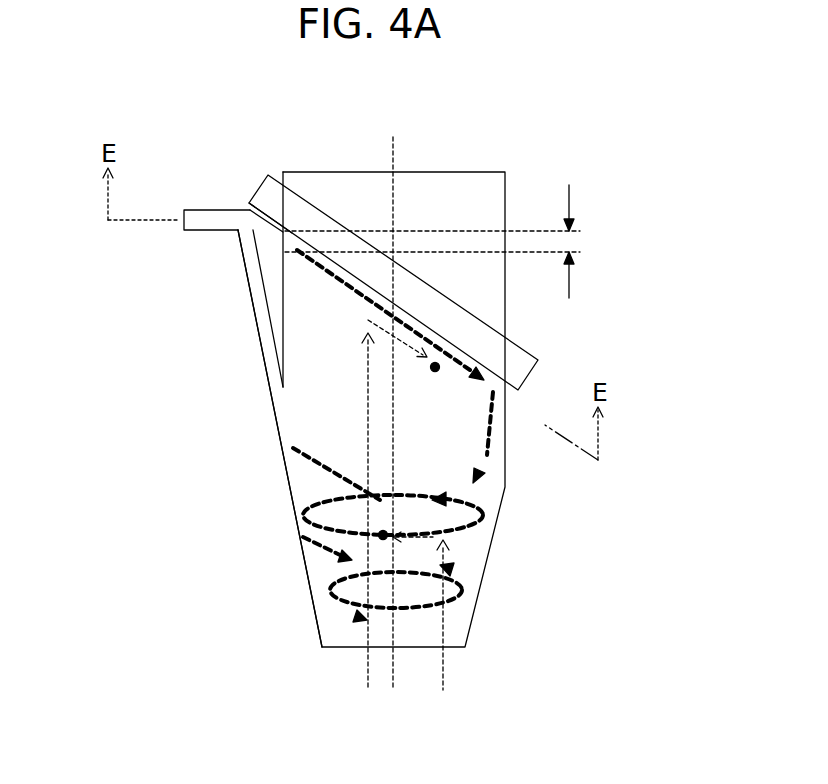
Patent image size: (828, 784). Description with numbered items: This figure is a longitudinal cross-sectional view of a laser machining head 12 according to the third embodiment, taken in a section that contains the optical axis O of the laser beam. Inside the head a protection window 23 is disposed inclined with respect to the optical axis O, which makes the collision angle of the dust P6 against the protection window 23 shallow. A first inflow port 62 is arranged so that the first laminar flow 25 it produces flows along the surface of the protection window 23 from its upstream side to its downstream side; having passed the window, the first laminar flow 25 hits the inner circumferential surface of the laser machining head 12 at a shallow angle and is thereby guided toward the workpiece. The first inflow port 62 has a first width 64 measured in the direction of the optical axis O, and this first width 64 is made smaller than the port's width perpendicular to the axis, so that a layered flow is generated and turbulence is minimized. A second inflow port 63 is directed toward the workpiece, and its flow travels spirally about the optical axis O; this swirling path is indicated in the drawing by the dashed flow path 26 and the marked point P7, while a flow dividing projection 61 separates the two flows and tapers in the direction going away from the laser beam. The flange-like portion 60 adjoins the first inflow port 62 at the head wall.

The laser machining head 12 is at (622, 147).
The protection window 23 is at (520, 348).
The first laminar flow 25 is at (348, 287).
The swirl flow 26 is at (483, 525).
The flange 60 is at (218, 210).
The flow dividing projection 61 is at (273, 275).
The first inflow port 62 is at (268, 228).
The second inflow port 63 is at (267, 368).
The first width 64 is at (572, 200).
The optical axis O is at (395, 145).
The dust P6 is at (435, 367).
The position P7 is at (383, 535).